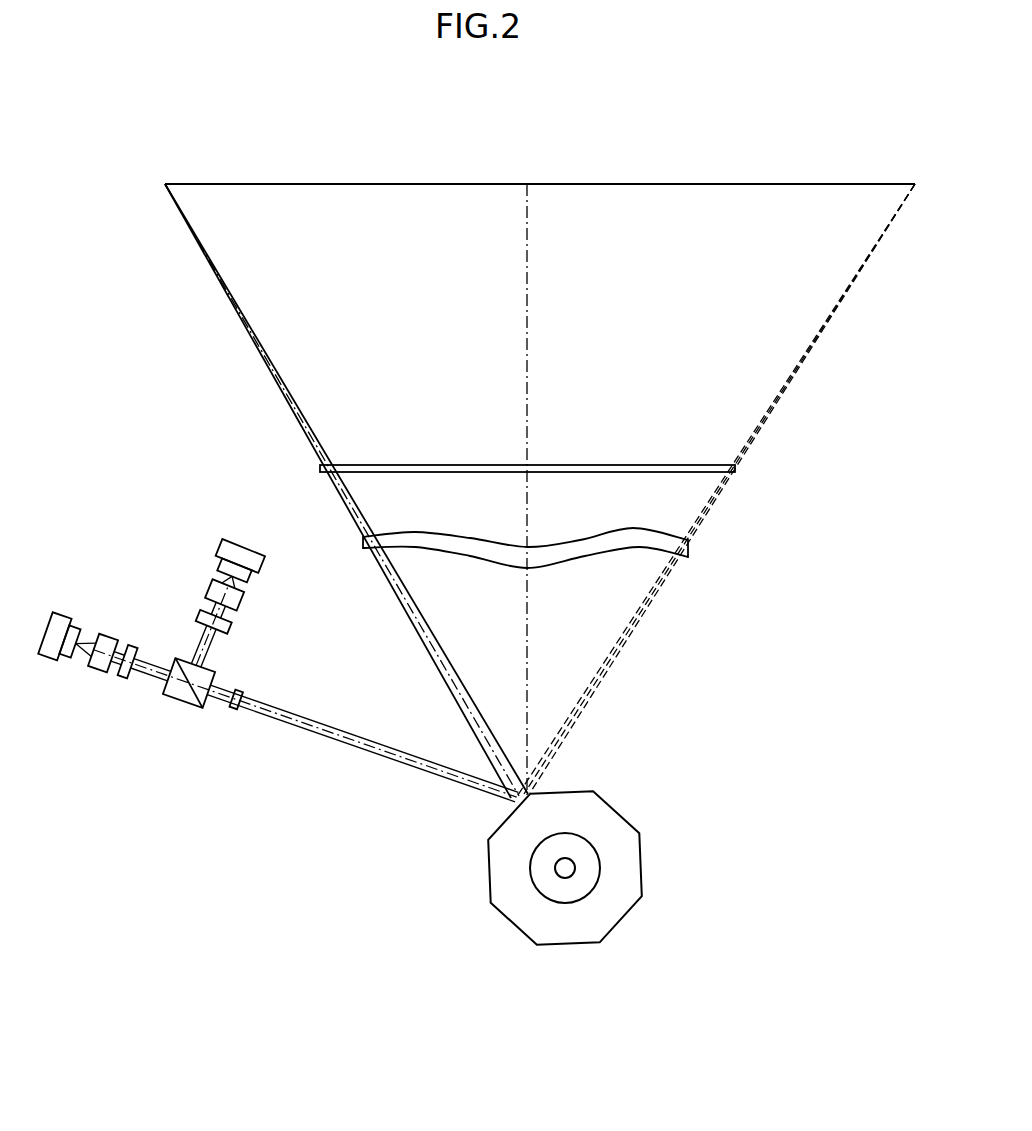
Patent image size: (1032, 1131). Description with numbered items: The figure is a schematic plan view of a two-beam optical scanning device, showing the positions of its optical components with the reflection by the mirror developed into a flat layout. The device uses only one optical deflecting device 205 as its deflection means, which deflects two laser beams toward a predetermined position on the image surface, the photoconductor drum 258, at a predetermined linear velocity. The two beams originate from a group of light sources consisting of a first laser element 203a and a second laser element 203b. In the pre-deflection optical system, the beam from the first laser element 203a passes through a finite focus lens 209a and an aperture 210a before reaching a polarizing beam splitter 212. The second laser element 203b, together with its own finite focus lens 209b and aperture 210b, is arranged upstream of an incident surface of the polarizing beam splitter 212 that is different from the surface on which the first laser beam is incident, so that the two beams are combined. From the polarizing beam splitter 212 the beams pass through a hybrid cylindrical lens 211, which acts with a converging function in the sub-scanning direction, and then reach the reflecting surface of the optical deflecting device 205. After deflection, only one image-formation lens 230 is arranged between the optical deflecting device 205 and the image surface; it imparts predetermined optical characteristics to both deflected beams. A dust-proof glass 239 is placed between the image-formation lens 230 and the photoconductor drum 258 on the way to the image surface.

The photoconductor drum 258 is at (705, 183).
The dust-proof glass 239 is at (737, 469).
The image-formation lens 230 is at (690, 548).
The optical deflecting device 205 is at (618, 876).
The first laser element 203a is at (50, 652).
The second laser element 203b is at (236, 536).
The finite focus lens 209a is at (110, 632).
The finite focus lens 209b is at (243, 603).
The aperture 210a is at (138, 640).
The aperture 210b is at (233, 629).
The hybrid cylindrical lens 211 is at (232, 711).
The polarizing beam splitter 212 is at (183, 703).